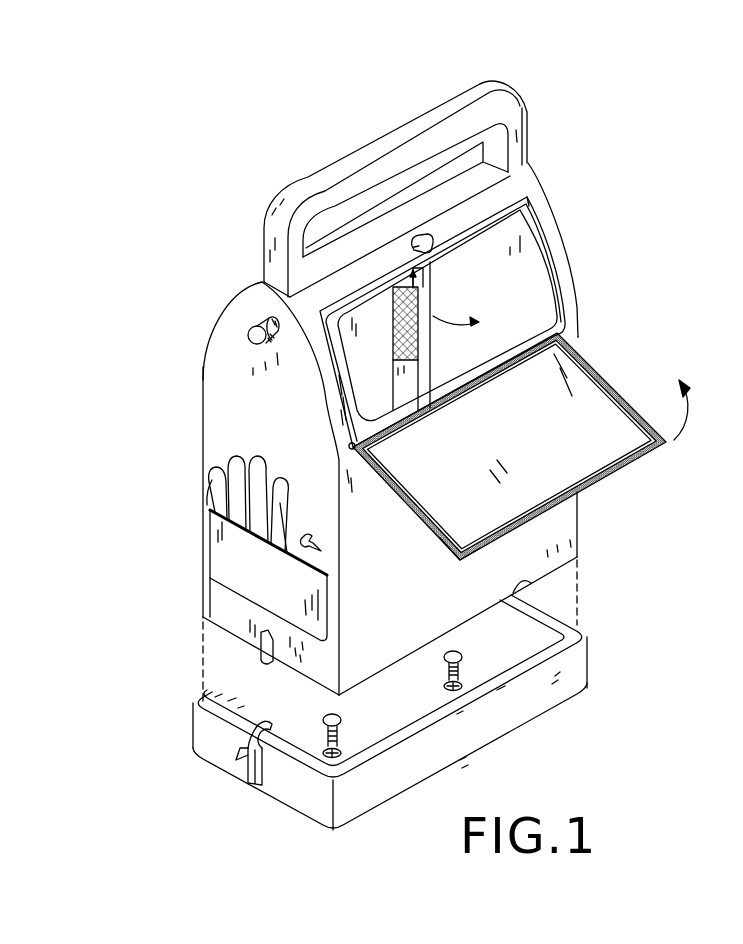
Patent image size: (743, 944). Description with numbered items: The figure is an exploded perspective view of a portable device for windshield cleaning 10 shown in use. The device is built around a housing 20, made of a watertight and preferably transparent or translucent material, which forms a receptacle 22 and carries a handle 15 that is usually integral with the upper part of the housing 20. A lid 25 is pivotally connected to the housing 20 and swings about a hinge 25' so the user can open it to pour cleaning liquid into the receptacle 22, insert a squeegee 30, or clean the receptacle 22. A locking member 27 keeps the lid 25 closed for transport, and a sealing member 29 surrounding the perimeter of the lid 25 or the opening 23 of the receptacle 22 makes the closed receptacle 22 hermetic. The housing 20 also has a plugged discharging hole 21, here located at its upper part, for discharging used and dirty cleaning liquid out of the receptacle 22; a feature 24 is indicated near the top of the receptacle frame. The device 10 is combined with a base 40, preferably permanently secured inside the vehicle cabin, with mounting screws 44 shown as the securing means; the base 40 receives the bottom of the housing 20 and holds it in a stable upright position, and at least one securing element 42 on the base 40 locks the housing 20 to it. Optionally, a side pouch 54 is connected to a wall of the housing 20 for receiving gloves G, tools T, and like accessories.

The portable device for windshield cleaning 10 is at (652, 157).
The handle 15 is at (397, 133).
The housing 20 is at (203, 366).
The discharging hole 21 is at (248, 322).
The receptacle 22 is at (566, 238).
The opening 23 is at (560, 320).
The catch 24 is at (528, 200).
The lid 25 is at (521, 446).
The hinge 25' is at (309, 436).
The locking member 27 is at (436, 246).
The sealing member 29 is at (437, 542).
The squeegee 30 is at (395, 307).
The base 40 is at (587, 668).
The securing element 42 is at (245, 735).
The mounting screws 44 is at (367, 712).
The side pouch 54 is at (222, 562).
The gloves G is at (230, 457).
The tools T is at (320, 548).